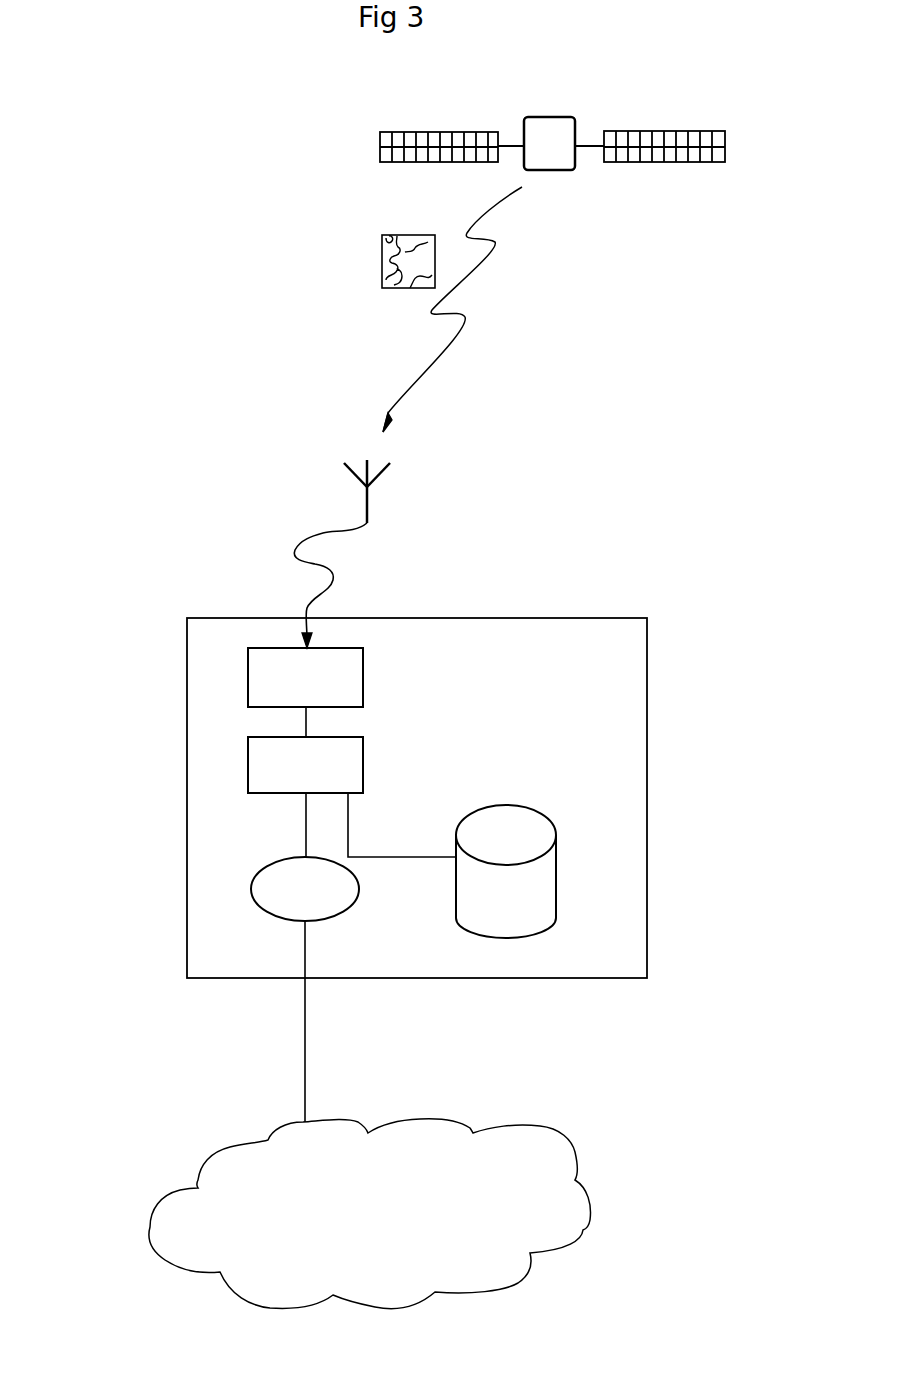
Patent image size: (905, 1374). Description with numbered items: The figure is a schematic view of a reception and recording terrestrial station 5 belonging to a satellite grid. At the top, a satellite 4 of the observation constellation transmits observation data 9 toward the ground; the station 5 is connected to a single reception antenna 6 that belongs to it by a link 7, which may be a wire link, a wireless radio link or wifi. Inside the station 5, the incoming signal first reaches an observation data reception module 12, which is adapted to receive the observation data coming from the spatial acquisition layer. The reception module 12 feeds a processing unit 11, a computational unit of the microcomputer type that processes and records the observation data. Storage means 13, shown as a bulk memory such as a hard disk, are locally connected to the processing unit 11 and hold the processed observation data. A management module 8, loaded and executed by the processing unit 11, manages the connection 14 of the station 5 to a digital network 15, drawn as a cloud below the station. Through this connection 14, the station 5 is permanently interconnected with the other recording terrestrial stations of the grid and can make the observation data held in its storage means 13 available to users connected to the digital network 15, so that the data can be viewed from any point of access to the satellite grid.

The satellite 4 is at (557, 123).
The observation data 9 is at (386, 270).
The reception antenna 6 is at (369, 500).
The link 7 is at (309, 538).
The reception and recording terrestrial station 5 is at (187, 927).
The observation data reception module 12 is at (257, 648).
The processing unit 11 is at (352, 736).
The management module 8 is at (266, 871).
The storage means 13 is at (556, 893).
The connection 14 is at (306, 979).
The digital network 15 is at (553, 1148).